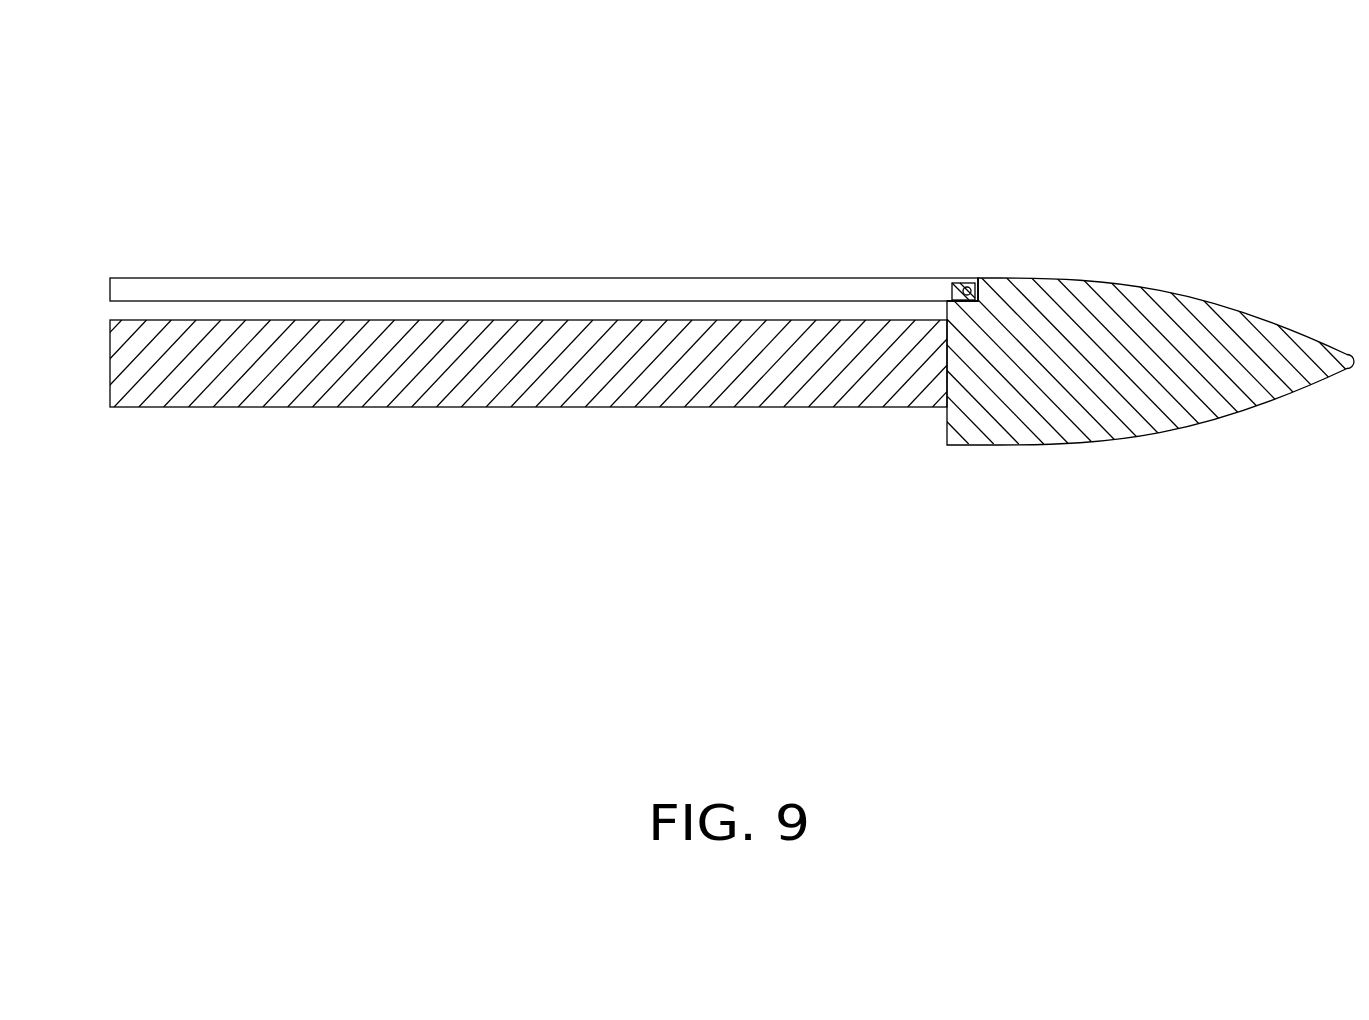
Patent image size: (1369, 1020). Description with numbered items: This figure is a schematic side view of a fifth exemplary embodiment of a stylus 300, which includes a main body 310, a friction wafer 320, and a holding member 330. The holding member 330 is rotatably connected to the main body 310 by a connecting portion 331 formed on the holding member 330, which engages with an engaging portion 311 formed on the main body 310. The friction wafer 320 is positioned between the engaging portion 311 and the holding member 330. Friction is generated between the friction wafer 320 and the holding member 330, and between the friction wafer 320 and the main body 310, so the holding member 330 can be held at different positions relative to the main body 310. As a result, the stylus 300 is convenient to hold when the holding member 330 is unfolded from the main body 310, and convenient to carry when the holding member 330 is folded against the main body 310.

The stylus 300 is at (603, 158).
The main body 310 is at (1010, 428).
The engaging portion 311 is at (979, 277).
The friction wafer 320 is at (950, 288).
The holding member 330 is at (472, 295).
The connecting portion 331 is at (966, 284).